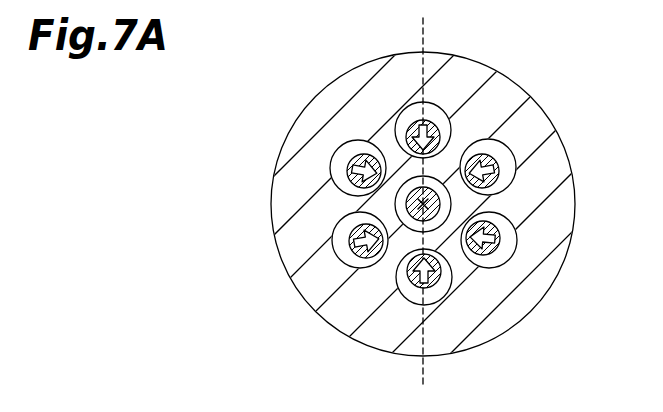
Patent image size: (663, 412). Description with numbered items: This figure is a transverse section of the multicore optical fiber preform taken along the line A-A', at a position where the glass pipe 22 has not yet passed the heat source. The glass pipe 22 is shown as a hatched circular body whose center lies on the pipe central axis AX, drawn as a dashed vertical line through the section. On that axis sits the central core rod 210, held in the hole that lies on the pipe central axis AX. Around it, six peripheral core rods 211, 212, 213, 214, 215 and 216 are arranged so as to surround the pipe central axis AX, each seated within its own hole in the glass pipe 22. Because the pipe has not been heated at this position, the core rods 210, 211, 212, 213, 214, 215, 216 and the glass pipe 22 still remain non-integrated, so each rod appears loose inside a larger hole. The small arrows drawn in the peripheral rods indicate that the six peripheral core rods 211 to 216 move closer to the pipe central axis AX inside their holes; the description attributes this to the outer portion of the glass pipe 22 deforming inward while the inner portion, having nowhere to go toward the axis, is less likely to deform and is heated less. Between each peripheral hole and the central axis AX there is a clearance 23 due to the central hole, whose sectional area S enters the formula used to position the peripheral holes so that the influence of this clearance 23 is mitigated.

The glass pipe 22 is at (473, 72).
The core rod 210 is at (511, 151).
The clearance 23 is at (441, 205).
The core rod 211 is at (500, 156).
The core rod 212 is at (498, 232).
The core rod 213 is at (437, 273).
The core rod 214 is at (354, 251).
The core rod 215 is at (352, 182).
The core rod 216 is at (407, 131).
The pipe central axis AX is at (396, 206).